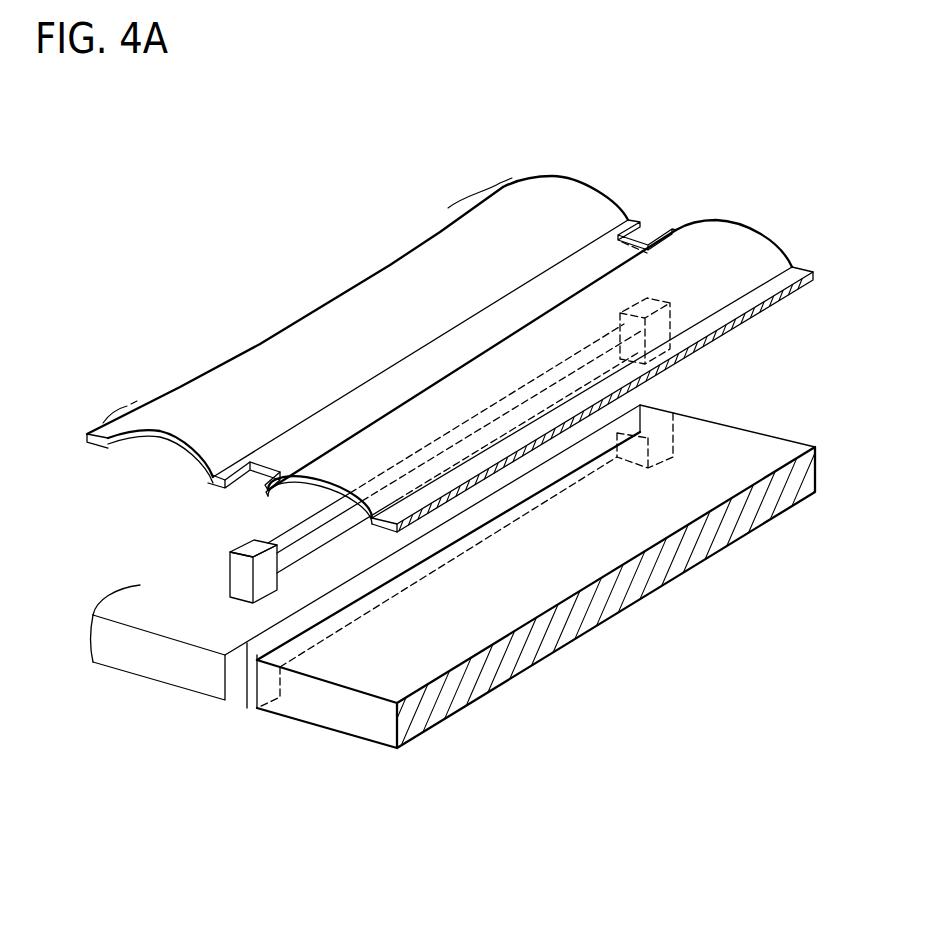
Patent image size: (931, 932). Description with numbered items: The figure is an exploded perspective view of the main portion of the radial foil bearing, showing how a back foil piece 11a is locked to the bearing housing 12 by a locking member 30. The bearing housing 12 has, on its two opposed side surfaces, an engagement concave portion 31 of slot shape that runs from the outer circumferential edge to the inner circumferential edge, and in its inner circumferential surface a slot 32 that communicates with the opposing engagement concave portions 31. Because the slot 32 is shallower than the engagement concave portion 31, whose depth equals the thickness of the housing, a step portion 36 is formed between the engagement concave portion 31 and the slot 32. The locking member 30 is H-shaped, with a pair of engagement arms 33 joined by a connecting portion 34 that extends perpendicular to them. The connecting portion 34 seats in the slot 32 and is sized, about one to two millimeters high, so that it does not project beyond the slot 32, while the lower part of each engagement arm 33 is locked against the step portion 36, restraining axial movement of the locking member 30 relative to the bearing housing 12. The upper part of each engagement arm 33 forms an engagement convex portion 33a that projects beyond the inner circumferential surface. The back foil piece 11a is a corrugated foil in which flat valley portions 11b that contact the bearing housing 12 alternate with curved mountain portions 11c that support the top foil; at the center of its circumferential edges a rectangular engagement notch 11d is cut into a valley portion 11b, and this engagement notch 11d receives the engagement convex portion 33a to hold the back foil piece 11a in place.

The back foil piece 11a is at (600, 168).
The valley portion 11b is at (508, 182).
The mountain portion 11c is at (551, 340).
The engagement notch 11d is at (653, 237).
The bearing housing 12 is at (152, 659).
The locking member 30 is at (198, 569).
The engagement concave portion 31 is at (238, 678).
The slot 32 is at (334, 611).
The engagement arm 33 is at (265, 578).
The engagement convex portion 33a is at (252, 548).
The connecting portion 34 is at (581, 356).
The step portion 36 is at (253, 653).